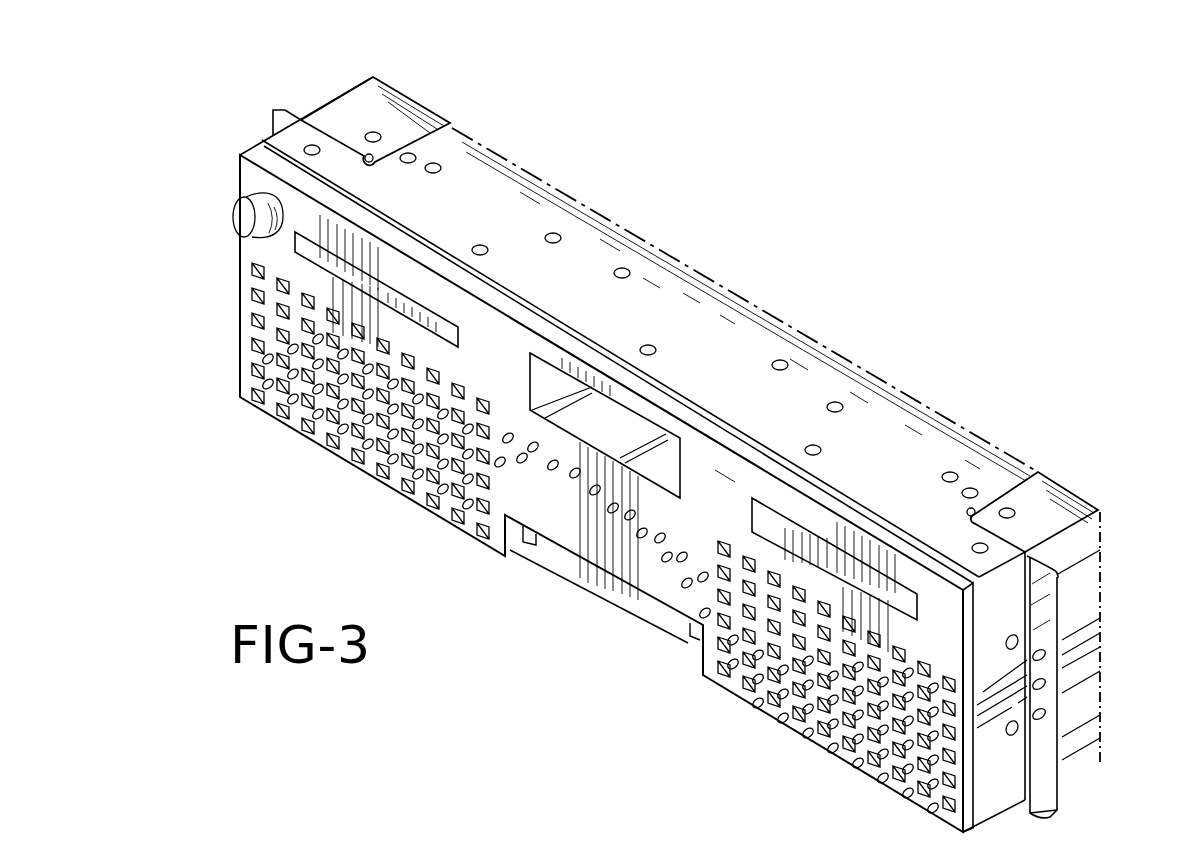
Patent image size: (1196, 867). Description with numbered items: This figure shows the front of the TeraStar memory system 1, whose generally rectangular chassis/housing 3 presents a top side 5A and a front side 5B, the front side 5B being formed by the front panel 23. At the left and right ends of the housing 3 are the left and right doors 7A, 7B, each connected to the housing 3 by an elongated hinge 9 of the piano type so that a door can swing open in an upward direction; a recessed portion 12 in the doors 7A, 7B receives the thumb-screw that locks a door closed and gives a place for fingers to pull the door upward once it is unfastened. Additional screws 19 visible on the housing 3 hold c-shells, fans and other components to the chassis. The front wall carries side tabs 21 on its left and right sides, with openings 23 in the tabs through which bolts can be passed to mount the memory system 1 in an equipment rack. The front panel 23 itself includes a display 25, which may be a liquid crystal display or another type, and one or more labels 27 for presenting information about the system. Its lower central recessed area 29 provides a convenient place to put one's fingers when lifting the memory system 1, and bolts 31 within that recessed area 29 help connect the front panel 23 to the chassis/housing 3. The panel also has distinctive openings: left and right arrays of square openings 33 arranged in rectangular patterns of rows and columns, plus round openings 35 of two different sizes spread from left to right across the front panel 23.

The TeraStar memory system 1 is at (530, 690).
The chassis/housing 3 is at (877, 430).
The top side 5A is at (672, 322).
The front side 5B is at (387, 488).
The left door 7A is at (337, 107).
The right door 7B is at (1092, 598).
The elongated hinges 9 is at (401, 137).
The recessed portion 12 is at (1077, 692).
The screws 19 is at (550, 232).
The side tabs 21 is at (1047, 792).
The front panel 23 is at (727, 482).
The display 25 is at (643, 427).
The labels 27 is at (447, 322).
The lower central recessed area 29 is at (630, 598).
The bolts 31 is at (528, 543).
The square openings 33 is at (288, 412).
The round openings 35 is at (372, 450).